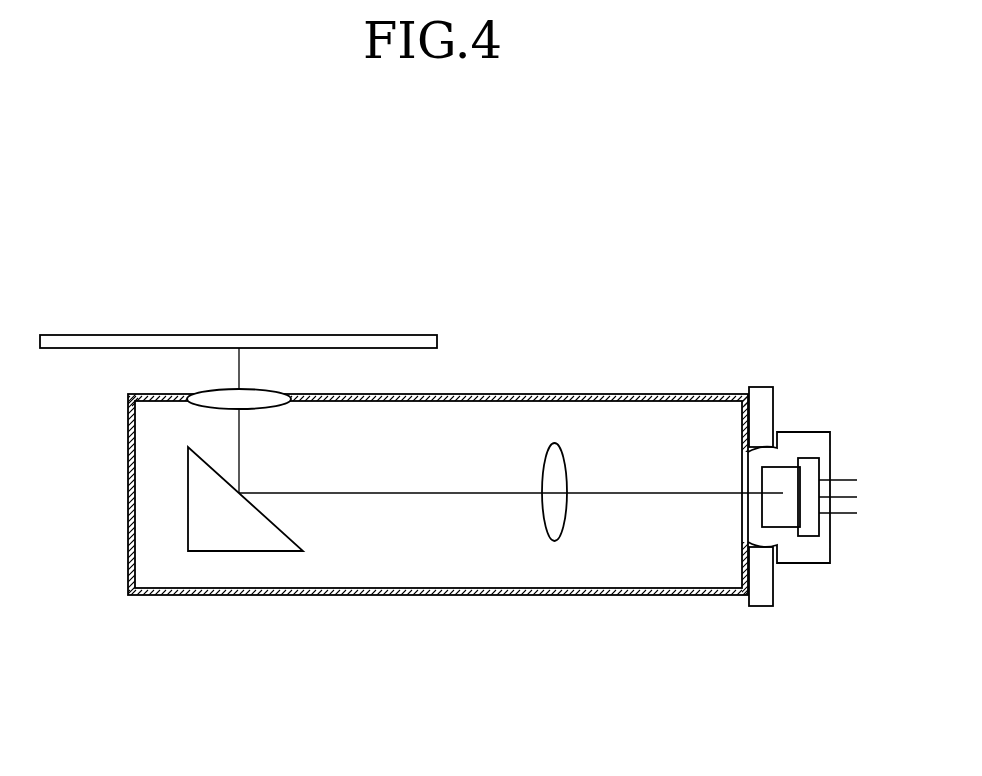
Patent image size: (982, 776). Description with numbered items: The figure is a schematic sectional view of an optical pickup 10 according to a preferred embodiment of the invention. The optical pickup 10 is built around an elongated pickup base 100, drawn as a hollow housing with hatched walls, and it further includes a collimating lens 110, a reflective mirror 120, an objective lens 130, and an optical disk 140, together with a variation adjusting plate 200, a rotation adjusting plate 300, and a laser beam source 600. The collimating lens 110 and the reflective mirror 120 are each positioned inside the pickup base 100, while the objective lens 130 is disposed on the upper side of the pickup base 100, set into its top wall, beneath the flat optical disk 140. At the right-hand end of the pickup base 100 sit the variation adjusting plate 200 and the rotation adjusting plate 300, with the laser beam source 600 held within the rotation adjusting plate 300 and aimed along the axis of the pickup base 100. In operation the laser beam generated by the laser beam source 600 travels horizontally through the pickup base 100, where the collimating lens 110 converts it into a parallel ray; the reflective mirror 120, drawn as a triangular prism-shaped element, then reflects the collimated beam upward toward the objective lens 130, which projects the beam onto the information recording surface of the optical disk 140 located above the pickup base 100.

The optical pickup 10 is at (612, 292).
The pickup base 100 is at (285, 596).
The collimating lens 110 is at (552, 530).
The reflective mirror 120 is at (190, 522).
The objective lens 130 is at (205, 389).
The optical disk 140 is at (163, 340).
The variation adjusting plate 200 is at (760, 395).
The rotation adjusting plate 300 is at (840, 553).
The laser beam source 600 is at (788, 523).